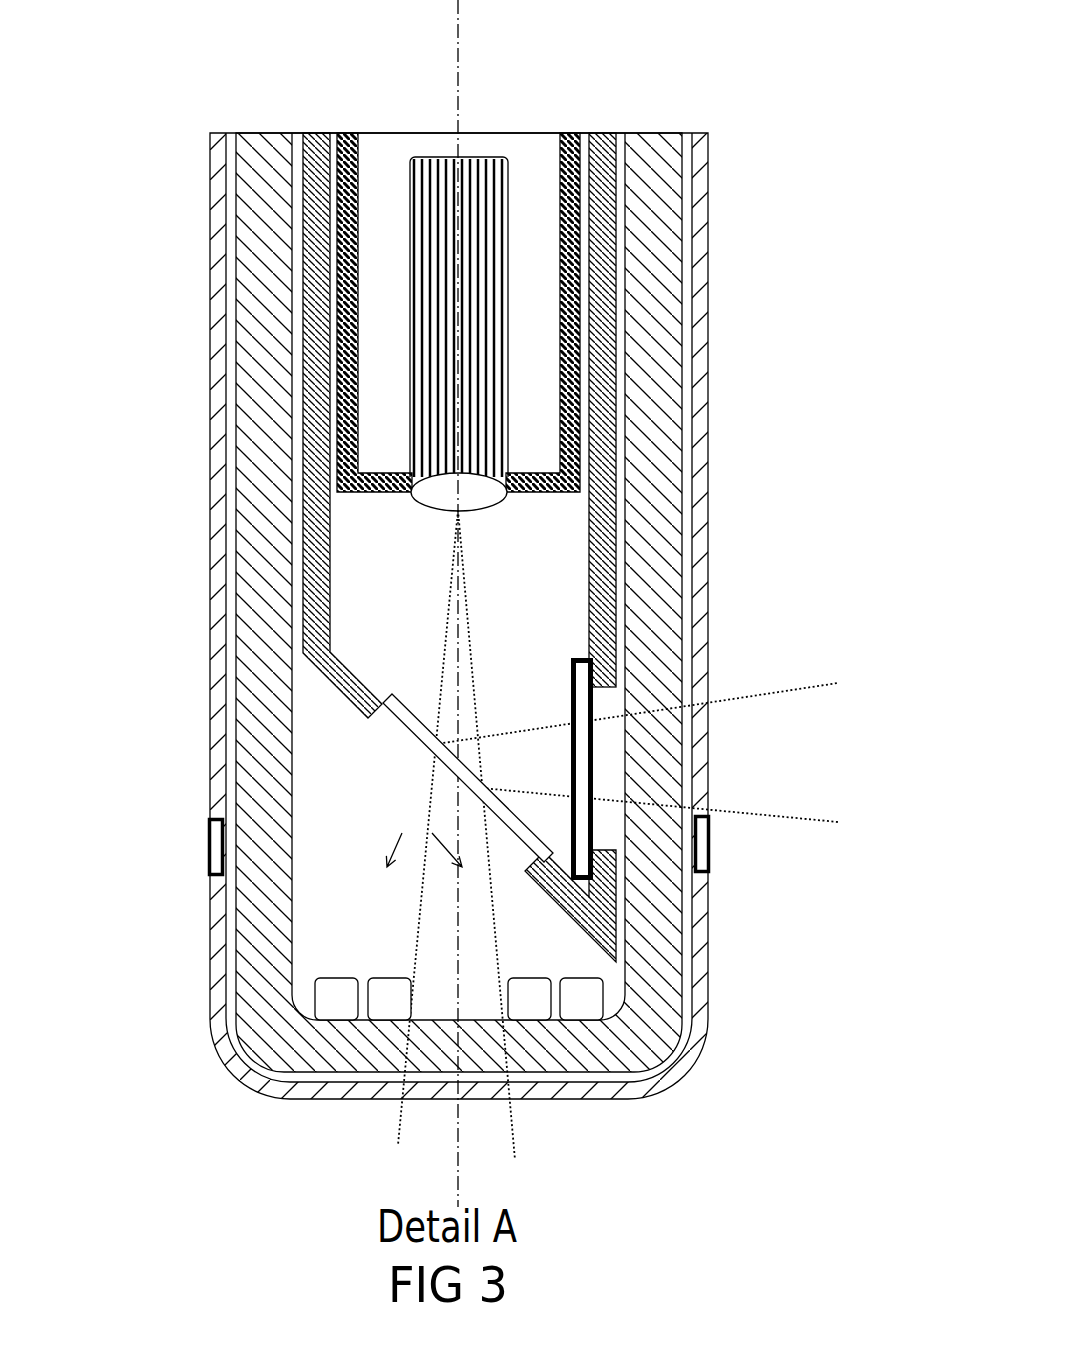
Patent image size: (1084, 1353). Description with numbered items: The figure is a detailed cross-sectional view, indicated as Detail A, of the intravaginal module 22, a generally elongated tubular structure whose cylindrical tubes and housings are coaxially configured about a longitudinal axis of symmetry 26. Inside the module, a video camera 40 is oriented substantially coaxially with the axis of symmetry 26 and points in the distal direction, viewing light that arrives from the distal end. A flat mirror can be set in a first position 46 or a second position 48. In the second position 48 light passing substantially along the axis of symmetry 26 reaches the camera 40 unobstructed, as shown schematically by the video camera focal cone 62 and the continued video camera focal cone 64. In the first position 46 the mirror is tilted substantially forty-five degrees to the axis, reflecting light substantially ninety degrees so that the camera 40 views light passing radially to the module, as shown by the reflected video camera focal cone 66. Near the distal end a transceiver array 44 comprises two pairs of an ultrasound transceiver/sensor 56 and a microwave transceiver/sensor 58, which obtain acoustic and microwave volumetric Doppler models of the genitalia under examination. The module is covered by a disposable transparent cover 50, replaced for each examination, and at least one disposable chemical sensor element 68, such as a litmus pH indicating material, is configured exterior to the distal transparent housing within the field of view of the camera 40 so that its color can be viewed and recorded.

The intravaginal module 22 is at (500, 607).
The longitudinal axis of symmetry 26 is at (465, 43).
The video camera 40 is at (509, 353).
The transceiver array 44 is at (424, 832).
The flat mirror in a first position 46 is at (414, 742).
The flat mirror in a second position 48 is at (599, 700).
The disposable transparent cover 50 is at (208, 610).
The ultrasound transceiver/sensor 56 is at (331, 978).
The microwave transceiver/sensor 58 is at (400, 978).
The video camera focal cone 62 is at (480, 680).
The continued video camera focal cone 64 is at (517, 1130).
The reflected video camera focal cone 66 is at (807, 813).
The disposable chemical sensor element 68 is at (208, 853).